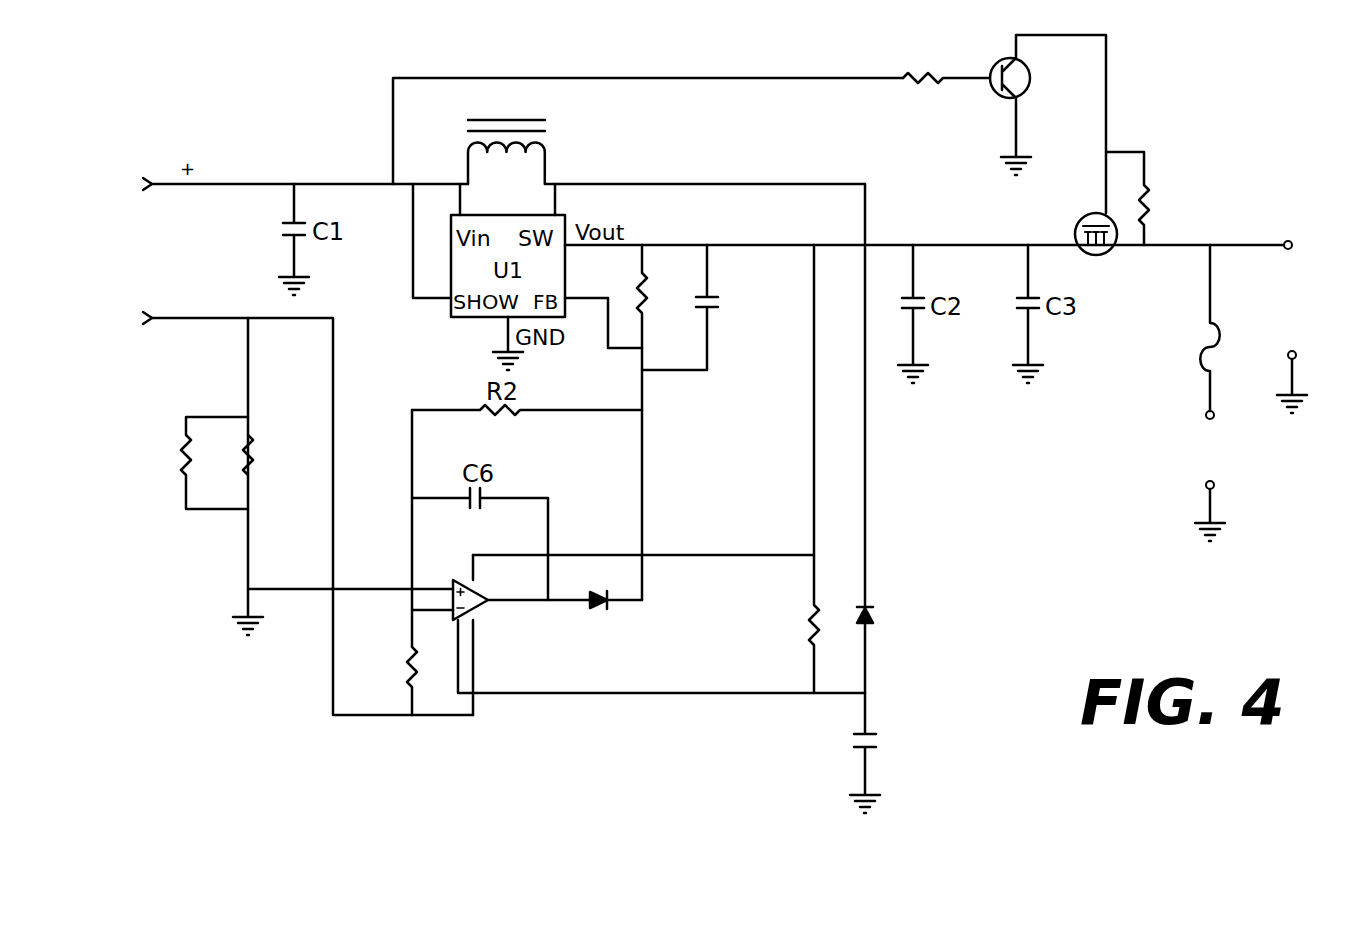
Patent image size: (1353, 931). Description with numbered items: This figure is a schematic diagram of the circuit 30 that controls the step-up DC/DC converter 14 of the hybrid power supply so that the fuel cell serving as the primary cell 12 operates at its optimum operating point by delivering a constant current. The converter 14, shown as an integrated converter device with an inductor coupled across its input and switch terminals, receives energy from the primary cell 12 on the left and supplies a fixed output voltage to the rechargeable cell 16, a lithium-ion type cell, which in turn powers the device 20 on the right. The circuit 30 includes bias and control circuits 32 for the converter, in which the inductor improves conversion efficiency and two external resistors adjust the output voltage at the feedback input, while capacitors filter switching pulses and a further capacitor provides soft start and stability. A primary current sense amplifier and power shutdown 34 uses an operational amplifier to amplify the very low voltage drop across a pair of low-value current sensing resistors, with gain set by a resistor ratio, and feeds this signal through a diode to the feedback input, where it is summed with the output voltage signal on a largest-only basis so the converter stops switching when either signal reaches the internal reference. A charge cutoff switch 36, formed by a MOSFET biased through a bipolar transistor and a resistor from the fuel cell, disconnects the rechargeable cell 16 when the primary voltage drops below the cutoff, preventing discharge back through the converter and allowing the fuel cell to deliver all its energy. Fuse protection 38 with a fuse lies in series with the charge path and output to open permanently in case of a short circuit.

The primary cell 12 is at (556, 140).
The switching type DC/DC boost type converter 14 is at (165, 253).
The rechargeable cell 16 is at (1228, 452).
The device 20 is at (1292, 344).
The circuit 30 is at (303, 762).
The bias and control circuits 32 is at (698, 402).
The primary current sense amplifier and power shutdown 34 is at (608, 732).
The charge cutoff switch 36 is at (962, 178).
The fuse protection 38 is at (1160, 366).